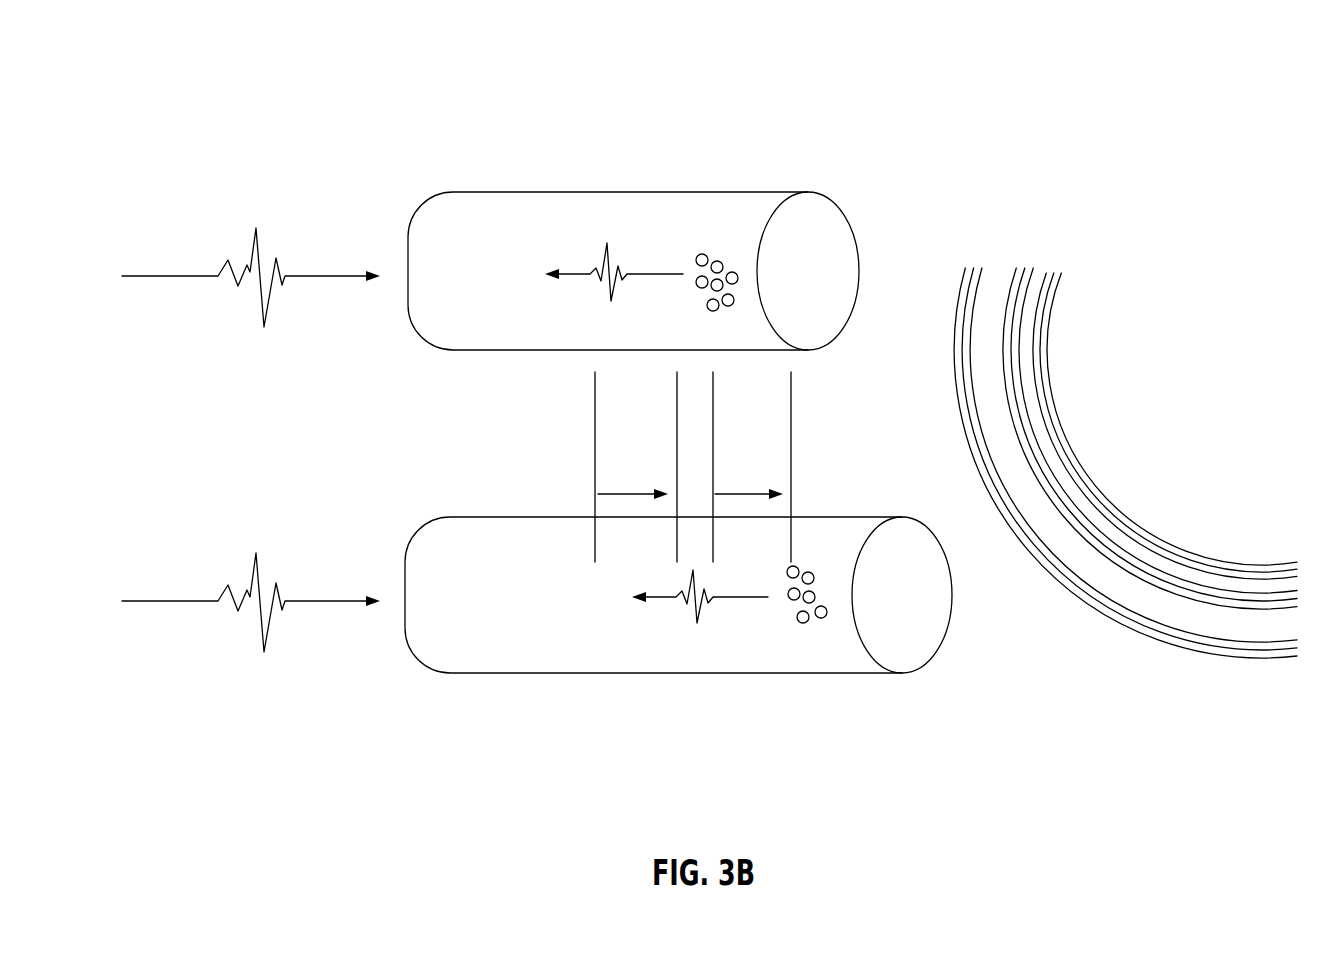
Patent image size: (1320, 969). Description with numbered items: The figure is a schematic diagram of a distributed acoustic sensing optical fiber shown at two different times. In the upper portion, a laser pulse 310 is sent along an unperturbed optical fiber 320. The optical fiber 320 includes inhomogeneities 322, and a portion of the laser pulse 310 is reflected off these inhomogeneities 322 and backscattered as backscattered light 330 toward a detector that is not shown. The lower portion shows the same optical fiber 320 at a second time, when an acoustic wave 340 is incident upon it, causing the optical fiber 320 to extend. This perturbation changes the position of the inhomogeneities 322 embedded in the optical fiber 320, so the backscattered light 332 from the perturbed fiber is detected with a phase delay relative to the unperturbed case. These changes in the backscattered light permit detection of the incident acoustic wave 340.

The laser pulse 310 is at (235, 300).
The optical fiber 320 is at (643, 66).
The inhomogeneities 322 is at (830, 532).
The backscattered light 330 is at (580, 287).
The backscattered light 332 is at (707, 623).
The acoustic wave 340 is at (1122, 416).